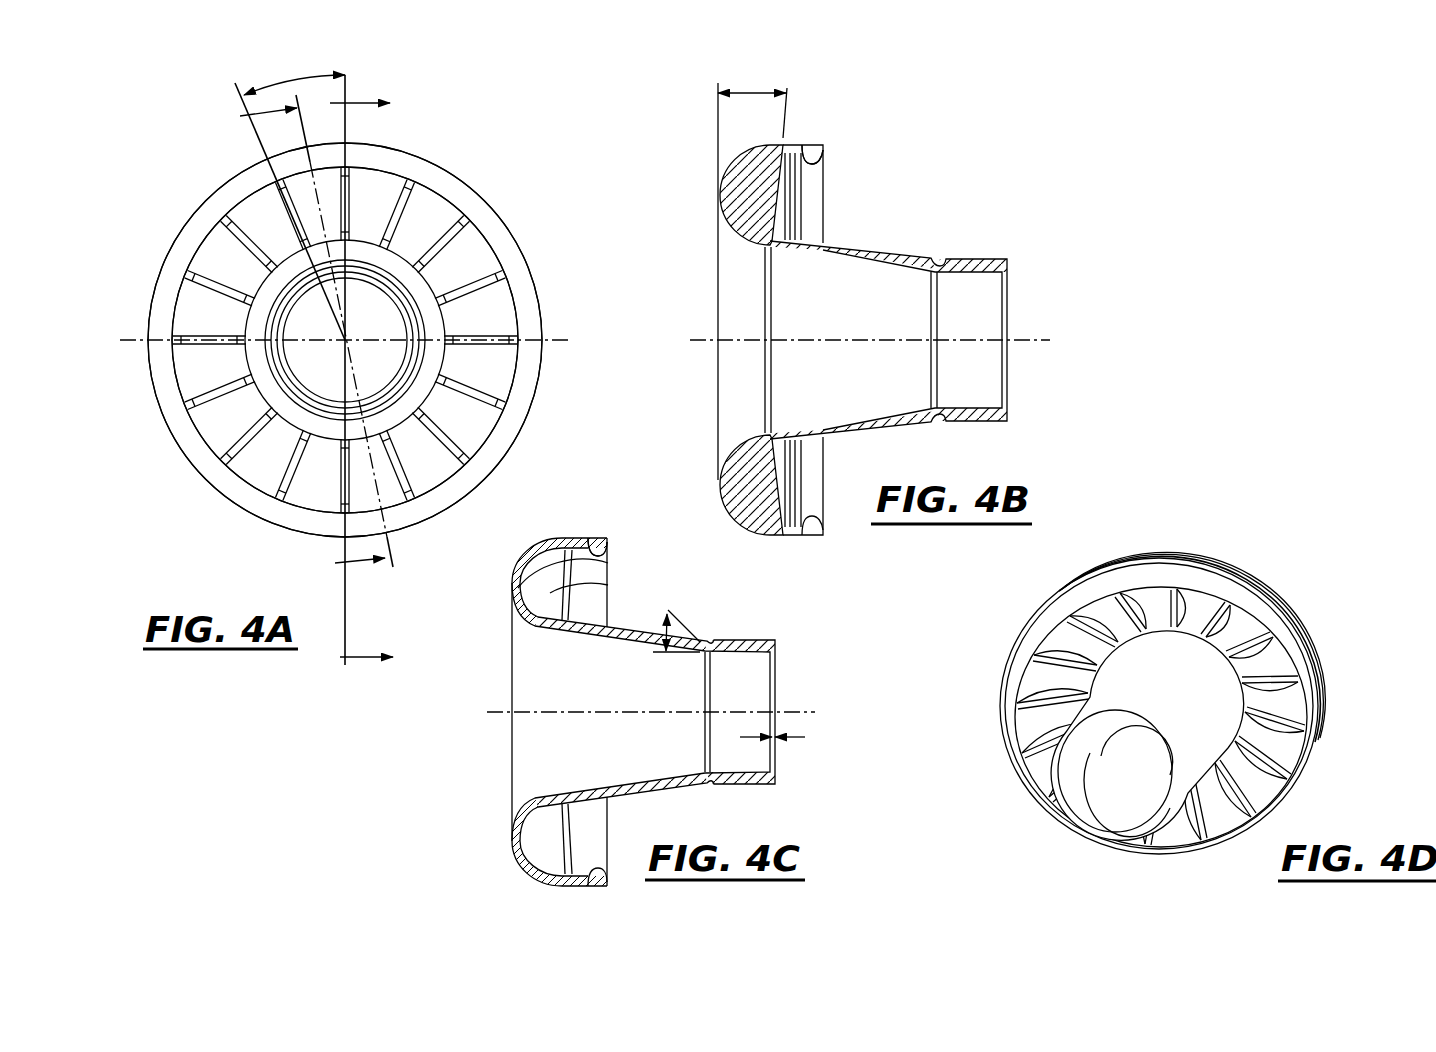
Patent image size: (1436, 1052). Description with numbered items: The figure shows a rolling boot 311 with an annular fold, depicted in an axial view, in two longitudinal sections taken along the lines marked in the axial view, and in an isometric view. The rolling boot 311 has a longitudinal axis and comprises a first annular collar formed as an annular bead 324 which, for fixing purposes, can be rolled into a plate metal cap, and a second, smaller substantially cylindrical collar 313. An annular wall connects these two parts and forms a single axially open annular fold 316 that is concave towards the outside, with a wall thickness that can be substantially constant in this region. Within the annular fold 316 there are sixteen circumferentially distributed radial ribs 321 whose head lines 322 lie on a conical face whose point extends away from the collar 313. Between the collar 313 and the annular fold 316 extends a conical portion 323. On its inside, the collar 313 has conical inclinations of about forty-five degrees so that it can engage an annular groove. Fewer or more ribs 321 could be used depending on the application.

In FIG. 4A, the rolling boot 311 is at (348, 361).
In FIG. 4B, the rolling boot 311 is at (847, 302).
In FIG. 4C, the rolling boot 311 is at (671, 685).
In FIG. 4D, the rolling boot 311 is at (1162, 703).
In FIG. 4B, the second cylindrical collar 313 is at (974, 261).
In FIG. 4C, the second cylindrical collar 313 is at (736, 641).
In FIG. 4C, the annular fold 316 is at (568, 567).
In FIG. 4A, the radial ribs 321 is at (484, 273).
In FIG. 4B, the radial ribs 321 is at (736, 207).
In FIG. 4C, the radial ribs 321 is at (551, 593).
In FIG. 4B, the head lines 322 is at (778, 194).
In FIG. 4B, the conical portion 323 is at (886, 432).
In FIG. 4C, the conical portion 323 is at (641, 794).
In FIG. 4B, the annular bead 324 is at (814, 157).
In FIG. 4C, the annular bead 324 is at (598, 536).